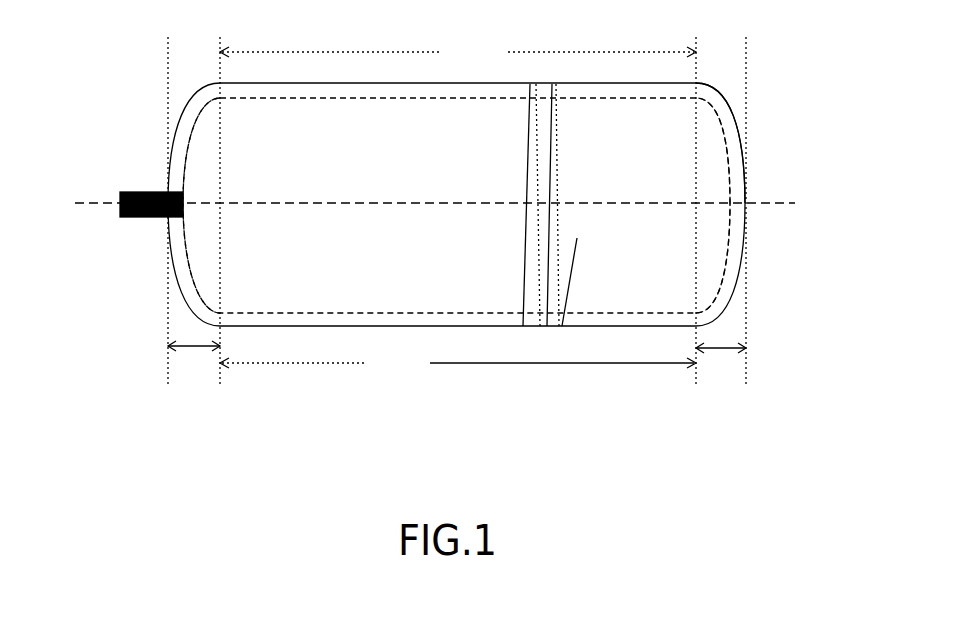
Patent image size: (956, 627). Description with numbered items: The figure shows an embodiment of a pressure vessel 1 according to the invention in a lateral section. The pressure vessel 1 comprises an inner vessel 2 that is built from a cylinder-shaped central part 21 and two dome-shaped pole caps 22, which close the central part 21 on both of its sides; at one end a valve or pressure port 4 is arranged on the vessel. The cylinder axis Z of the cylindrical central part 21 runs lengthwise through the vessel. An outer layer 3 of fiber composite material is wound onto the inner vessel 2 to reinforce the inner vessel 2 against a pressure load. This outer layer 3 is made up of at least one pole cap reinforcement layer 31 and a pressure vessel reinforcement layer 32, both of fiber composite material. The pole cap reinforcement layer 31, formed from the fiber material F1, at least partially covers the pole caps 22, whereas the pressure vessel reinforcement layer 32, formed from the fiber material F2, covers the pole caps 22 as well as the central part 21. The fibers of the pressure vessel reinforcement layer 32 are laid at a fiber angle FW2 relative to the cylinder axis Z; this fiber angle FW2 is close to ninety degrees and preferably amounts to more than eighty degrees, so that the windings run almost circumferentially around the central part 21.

The pressure vessel 1 is at (127, 62).
The inner vessel 2 is at (378, 101).
The outer layer 3 is at (456, 204).
The valve/pressure port 4 is at (151, 190).
The cylindrical central part 21 is at (458, 57).
The dome-shaped pole caps 22 is at (190, 252).
The pole cap reinforcement layer 31 is at (458, 367).
The pressure vessel reinforcement layer 32 is at (193, 352).
The fiber material of the pole cap reinforcement layer F1 is at (727, 115).
The fiber material of the pressure vessel reinforcement layer F2 is at (520, 261).
The fiber angle in the pressure vessel reinforcement layer FW2 is at (560, 186).
The cylinder axis Z is at (447, 204).